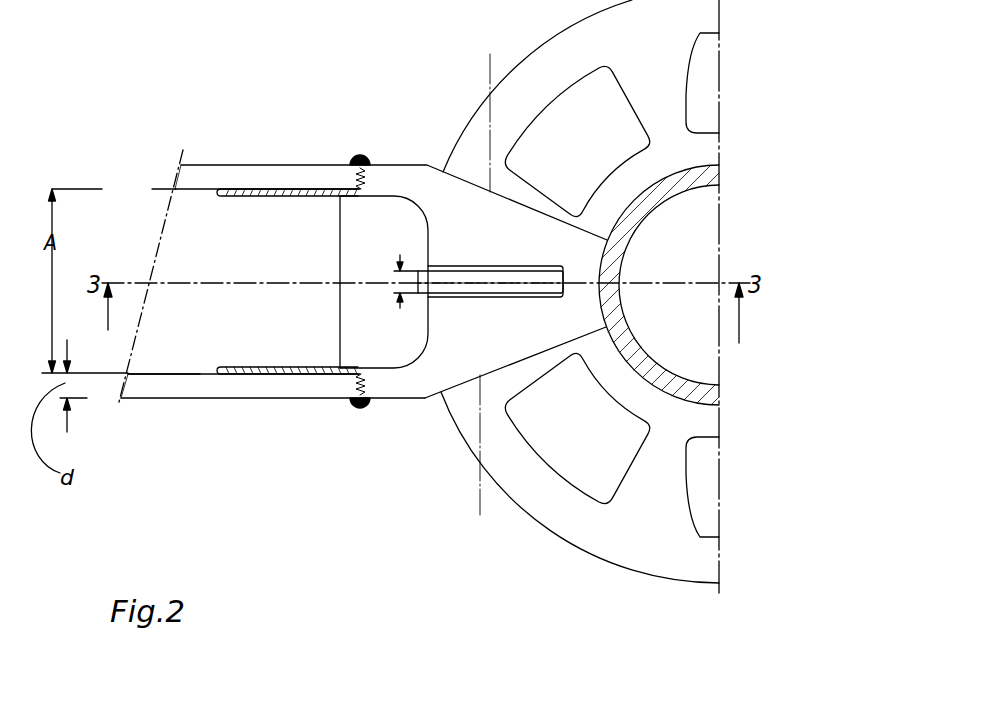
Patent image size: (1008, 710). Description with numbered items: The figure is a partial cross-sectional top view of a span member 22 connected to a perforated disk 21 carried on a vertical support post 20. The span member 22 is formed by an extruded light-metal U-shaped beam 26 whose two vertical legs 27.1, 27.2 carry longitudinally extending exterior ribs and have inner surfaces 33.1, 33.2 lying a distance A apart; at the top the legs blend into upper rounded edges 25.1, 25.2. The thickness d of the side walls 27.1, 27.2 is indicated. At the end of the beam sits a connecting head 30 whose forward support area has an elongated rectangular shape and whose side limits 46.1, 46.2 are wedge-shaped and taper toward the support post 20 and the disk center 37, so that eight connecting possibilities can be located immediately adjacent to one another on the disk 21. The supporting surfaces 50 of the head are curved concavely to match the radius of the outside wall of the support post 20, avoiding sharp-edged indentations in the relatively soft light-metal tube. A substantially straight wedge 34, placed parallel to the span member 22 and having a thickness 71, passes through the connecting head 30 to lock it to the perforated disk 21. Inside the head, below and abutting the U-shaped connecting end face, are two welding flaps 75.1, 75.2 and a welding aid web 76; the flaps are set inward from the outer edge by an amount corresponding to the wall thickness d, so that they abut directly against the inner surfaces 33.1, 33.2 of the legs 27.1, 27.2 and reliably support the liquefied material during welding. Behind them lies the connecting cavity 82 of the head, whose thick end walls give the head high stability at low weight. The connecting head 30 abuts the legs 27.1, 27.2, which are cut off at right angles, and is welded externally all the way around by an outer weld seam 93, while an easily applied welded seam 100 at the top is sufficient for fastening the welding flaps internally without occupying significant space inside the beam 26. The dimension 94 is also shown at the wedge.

The span member 22 is at (178, 125).
The upper rounded edge 25.1 is at (215, 163).
The upper rounded edge 25.2 is at (268, 400).
The U-shaped beam 26 is at (222, 408).
The vertical leg 27.1 is at (165, 185).
The vertical leg 27.2 is at (115, 384).
The inner surface 33.1 is at (184, 192).
The inner surface 33.2 is at (178, 370).
The welded seam 100 is at (247, 197).
The welding flap 75.1 is at (300, 197).
The welding flap 75.2 is at (334, 366).
The welding aid web 76 is at (340, 250).
The connecting cavity 82 is at (413, 337).
The outer weld seam 93 is at (360, 160).
The wedge 34 is at (467, 266).
The thickness of the wedge 71 is at (404, 283).
The pin diameter 94 is at (400, 270).
The side limit 46.1 is at (492, 111).
The side limit 46.2 is at (487, 461).
The connecting head 30 is at (436, 425).
The perforated disk 21 is at (635, 555).
The disk center 37 is at (719, 283).
The vertical support post 20 is at (640, 213).
The supporting surface 50 is at (603, 295).